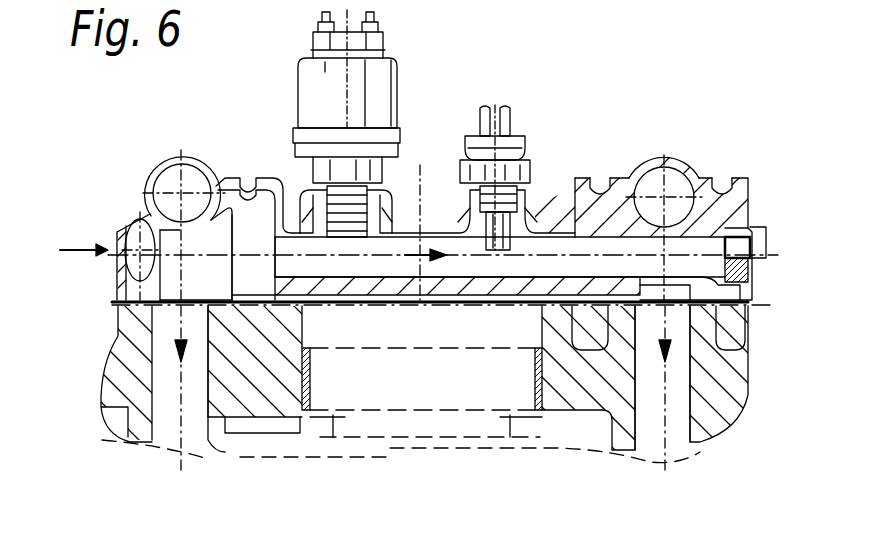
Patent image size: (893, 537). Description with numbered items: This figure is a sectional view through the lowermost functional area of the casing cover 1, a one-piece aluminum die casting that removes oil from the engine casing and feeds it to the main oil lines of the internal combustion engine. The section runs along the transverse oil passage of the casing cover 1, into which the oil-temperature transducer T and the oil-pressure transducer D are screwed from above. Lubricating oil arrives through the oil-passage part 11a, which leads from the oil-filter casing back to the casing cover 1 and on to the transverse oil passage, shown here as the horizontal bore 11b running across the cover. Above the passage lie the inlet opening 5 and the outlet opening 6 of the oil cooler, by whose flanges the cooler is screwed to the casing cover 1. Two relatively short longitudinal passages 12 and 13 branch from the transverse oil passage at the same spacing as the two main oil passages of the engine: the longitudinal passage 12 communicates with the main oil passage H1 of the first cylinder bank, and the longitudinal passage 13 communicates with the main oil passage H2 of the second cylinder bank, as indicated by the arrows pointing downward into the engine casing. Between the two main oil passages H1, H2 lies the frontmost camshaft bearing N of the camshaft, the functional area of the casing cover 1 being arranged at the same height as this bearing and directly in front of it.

The casing cover 1 is at (738, 208).
The inlet opening 5 is at (657, 185).
The outlet opening 6 is at (192, 182).
The oil-passage part 11a is at (138, 232).
The passage 11b is at (380, 275).
The longitudinal passage 12 is at (200, 283).
The longitudinal passage 13 is at (655, 295).
The oil-pressure transducer D is at (388, 92).
The oil-temperature transducer T is at (518, 142).
The camshaft bearing N is at (312, 372).
The main oil passage H1 is at (187, 390).
The main oil passage H2 is at (662, 390).